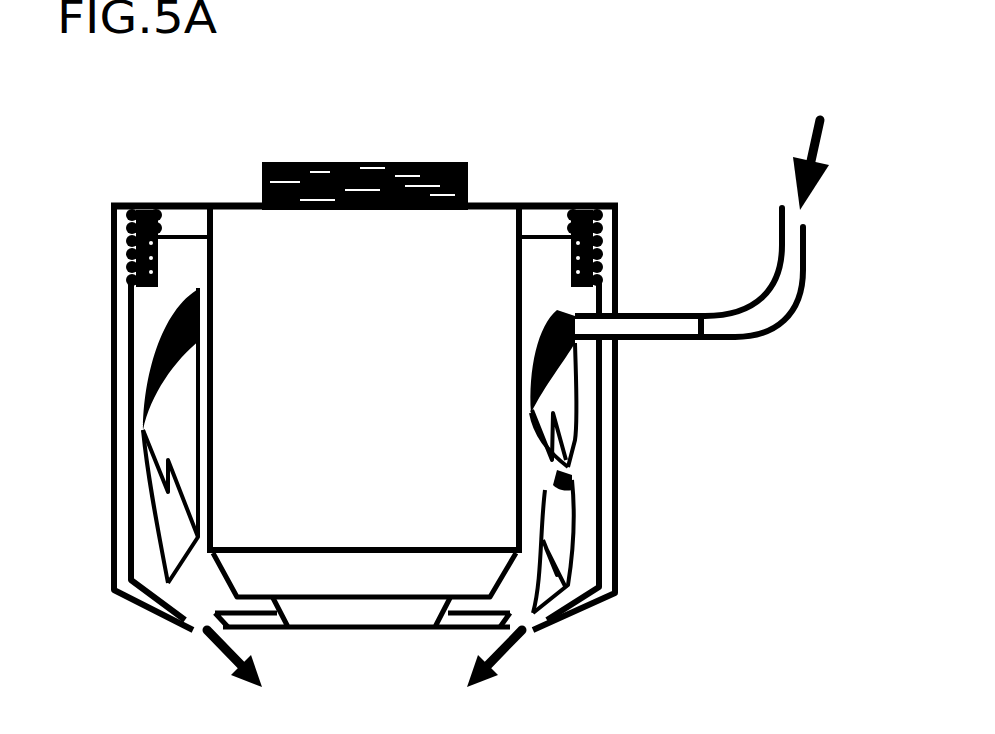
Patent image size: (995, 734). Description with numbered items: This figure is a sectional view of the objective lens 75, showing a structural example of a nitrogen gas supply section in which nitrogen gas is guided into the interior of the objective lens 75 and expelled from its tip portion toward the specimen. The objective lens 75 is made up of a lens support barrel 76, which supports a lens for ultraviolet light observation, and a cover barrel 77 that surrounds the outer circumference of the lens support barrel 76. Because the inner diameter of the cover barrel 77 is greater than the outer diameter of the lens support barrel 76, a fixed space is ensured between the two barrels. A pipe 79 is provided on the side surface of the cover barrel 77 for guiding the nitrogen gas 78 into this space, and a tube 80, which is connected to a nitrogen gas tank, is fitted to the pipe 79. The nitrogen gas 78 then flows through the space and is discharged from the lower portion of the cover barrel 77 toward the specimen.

The objective lens 75 is at (162, 157).
The lens support barrel 76 is at (328, 371).
The cover barrel 77 is at (111, 366).
The nitrogen gas 78 is at (815, 128).
The pipe 79 is at (663, 345).
The tube 80 is at (795, 293).